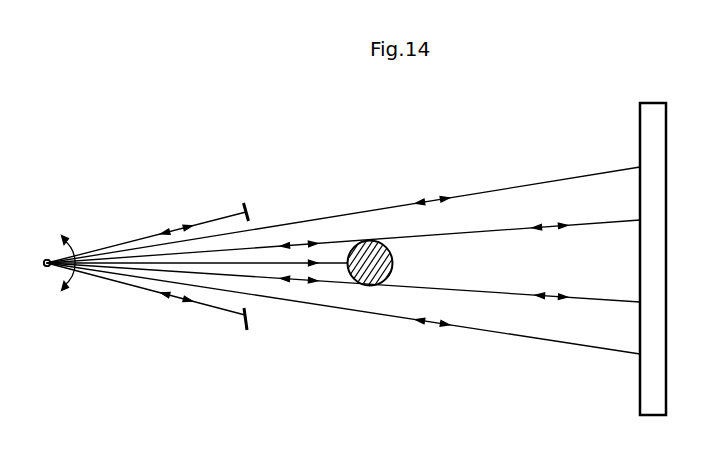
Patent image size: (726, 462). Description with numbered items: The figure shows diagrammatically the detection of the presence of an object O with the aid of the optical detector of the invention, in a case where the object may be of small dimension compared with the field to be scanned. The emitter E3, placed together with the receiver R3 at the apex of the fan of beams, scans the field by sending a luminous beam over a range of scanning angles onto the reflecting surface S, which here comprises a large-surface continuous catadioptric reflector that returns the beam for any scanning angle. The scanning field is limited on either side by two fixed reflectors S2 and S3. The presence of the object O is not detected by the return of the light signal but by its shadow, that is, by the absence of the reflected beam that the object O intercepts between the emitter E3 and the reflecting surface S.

The emitter E3 is at (41, 252).
The receiver R3 is at (44, 279).
The fixed reflector S2 is at (152, 219).
The fixed reflector S3 is at (152, 308).
The object O is at (367, 263).
The reflecting surface S is at (653, 259).